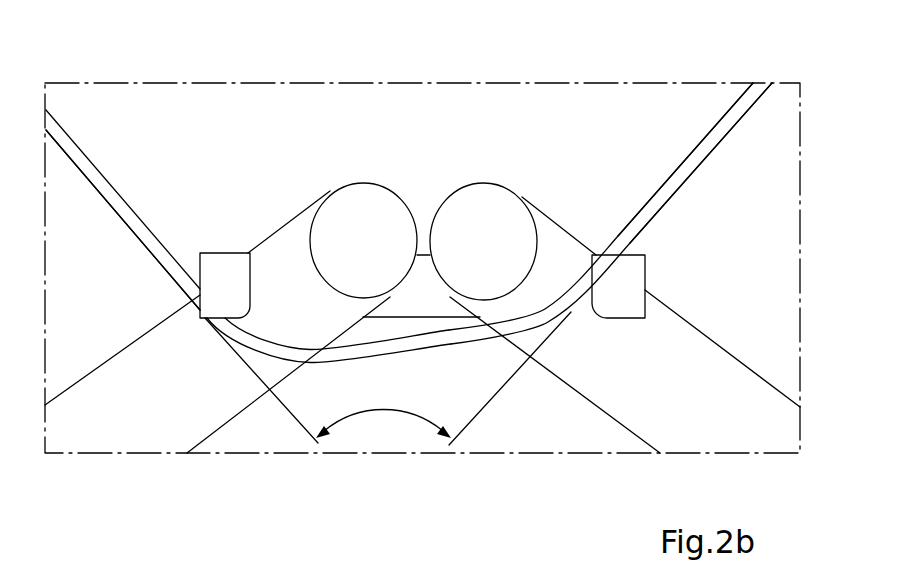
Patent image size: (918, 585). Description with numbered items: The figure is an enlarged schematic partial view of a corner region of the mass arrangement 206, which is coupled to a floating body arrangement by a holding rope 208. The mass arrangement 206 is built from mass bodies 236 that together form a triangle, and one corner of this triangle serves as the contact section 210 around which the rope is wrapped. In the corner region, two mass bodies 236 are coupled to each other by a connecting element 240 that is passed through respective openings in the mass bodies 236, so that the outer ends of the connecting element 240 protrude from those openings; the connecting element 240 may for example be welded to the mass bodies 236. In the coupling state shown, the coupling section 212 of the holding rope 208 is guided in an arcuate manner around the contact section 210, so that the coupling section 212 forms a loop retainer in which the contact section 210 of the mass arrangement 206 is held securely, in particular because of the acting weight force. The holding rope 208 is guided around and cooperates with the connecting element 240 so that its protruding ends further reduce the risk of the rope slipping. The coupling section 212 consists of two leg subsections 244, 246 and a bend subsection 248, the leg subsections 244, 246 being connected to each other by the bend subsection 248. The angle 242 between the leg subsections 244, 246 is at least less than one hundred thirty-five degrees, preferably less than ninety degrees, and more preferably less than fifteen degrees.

The mass arrangement 206 is at (647, 125).
The holding rope 208 is at (113, 195).
The contact section 210 is at (403, 127).
The coupling section 212 is at (224, 365).
The mass bodies 236 is at (107, 377).
The connecting element 240 is at (630, 282).
The angle 242 is at (388, 406).
The leg subsection 244 is at (685, 213).
The leg subsection 246 is at (129, 256).
The bend subsection 248 is at (484, 368).